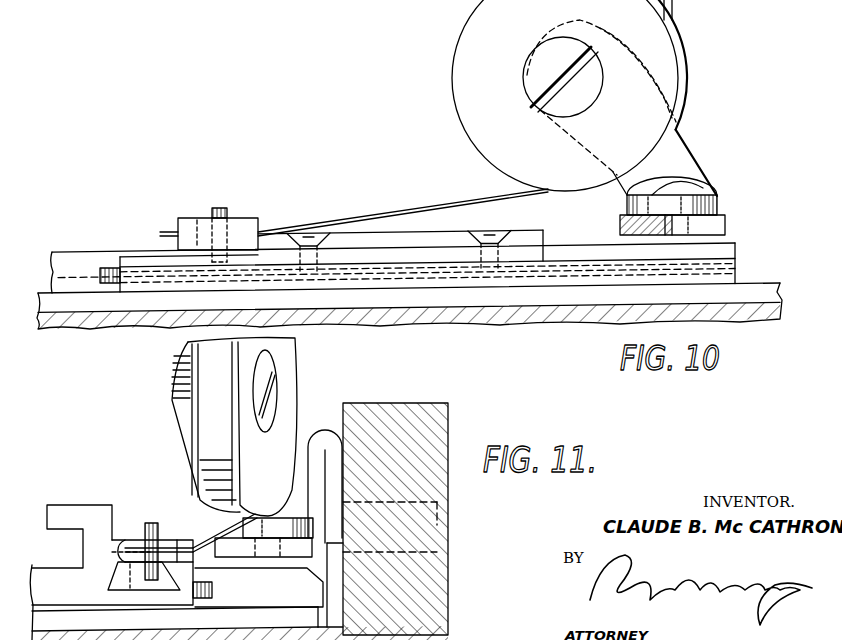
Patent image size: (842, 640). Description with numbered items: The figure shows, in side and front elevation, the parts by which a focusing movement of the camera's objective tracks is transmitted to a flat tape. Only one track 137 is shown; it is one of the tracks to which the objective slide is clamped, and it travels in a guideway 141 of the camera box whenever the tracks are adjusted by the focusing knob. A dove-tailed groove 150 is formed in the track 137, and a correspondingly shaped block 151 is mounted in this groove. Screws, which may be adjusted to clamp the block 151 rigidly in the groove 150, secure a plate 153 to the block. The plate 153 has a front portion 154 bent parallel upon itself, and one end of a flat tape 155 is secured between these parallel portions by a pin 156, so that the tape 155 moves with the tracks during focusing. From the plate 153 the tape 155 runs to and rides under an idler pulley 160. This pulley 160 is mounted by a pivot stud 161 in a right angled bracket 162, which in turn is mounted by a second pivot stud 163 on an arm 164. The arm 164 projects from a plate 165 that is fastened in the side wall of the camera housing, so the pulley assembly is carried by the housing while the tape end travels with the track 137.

In FIG. 11, the track 137 is at (76, 512).
In FIG. 11, the guideway 141 is at (305, 598).
In FIG. 11, the dove-tailed groove 150 is at (125, 597).
In FIG. 11, the block 151 is at (118, 578).
In FIG. 10, the plate 153 is at (435, 238).
In FIG. 10, the front portion 154 is at (243, 228).
In FIG. 11, the front portion 154 is at (120, 537).
In FIG. 10, the flat tape 155 is at (440, 200).
In FIG. 11, the flat tape 155 is at (188, 525).
In FIG. 10, the pin 156 is at (222, 210).
In FIG. 11, the pin 156 is at (152, 523).
In FIG. 10, the idler pulley 160 is at (462, 85).
In FIG. 11, the idler pulley 160 is at (287, 404).
In FIG. 10, the pivot stud 161 is at (541, 45).
In FIG. 11, the pivot stud 161 is at (265, 363).
In FIG. 10, the right angled bracket 162 is at (680, 160).
In FIG. 11, the right angled bracket 162 is at (178, 400).
In FIG. 10, the pivot stud 163 is at (678, 188).
In FIG. 11, the pivot stud 163 is at (295, 507).
In FIG. 10, the arm 164 is at (715, 227).
In FIG. 11, the arm 164 is at (235, 549).
In FIG. 11, the plate 165 is at (323, 448).